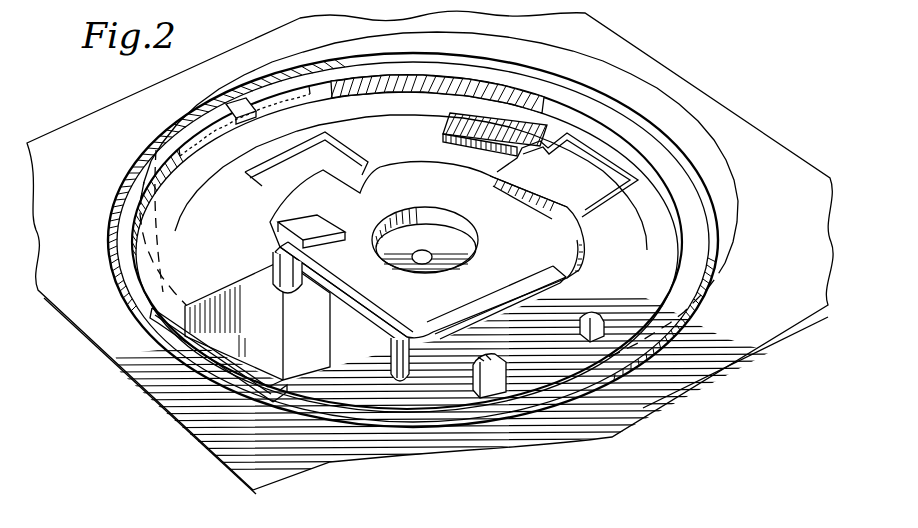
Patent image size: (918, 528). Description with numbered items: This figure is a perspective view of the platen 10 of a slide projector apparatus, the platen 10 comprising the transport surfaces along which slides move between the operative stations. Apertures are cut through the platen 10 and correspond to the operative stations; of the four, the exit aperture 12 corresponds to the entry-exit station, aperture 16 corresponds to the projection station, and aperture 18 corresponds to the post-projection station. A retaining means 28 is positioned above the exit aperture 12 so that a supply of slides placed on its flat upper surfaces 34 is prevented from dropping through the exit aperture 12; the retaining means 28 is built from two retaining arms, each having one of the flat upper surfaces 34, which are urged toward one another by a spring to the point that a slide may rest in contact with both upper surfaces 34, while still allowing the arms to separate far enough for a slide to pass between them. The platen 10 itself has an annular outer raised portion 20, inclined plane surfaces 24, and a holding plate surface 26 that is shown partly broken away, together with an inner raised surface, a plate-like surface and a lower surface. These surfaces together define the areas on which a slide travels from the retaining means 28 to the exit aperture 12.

The platen 10 is at (731, 69).
The exit aperture 12 is at (394, 280).
The aperture 16 is at (540, 165).
The aperture 18 is at (306, 159).
The annular outer raised portion 20 is at (711, 229).
The inclined plane surfaces 24 is at (503, 75).
The holding plate surface 26 is at (264, 98).
The retaining means 28 is at (140, 357).
The upper surface 34 is at (318, 248).